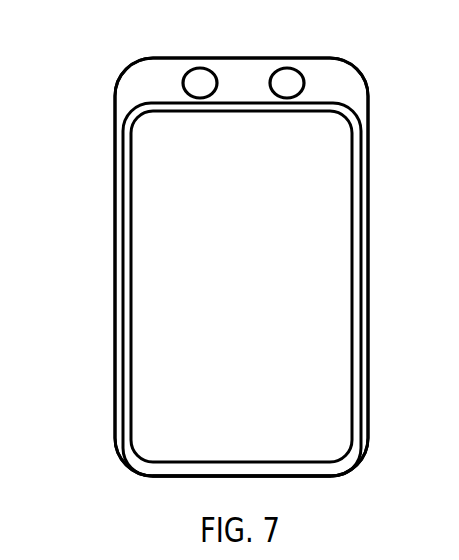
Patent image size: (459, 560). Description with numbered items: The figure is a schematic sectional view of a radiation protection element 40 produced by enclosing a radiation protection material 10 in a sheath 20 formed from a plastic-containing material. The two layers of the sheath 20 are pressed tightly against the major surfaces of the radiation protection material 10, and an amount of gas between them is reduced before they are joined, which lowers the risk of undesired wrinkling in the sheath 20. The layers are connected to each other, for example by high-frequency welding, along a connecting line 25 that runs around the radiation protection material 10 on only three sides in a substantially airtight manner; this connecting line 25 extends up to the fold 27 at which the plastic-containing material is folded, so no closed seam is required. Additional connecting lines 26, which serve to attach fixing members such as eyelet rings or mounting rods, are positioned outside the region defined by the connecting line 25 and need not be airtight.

The radiation protection element 40 is at (107, 101).
The sheath 20 is at (258, 248).
The connecting line 25 is at (273, 281).
The fold 27 is at (272, 497).
The radiation protection material 10 is at (232, 294).
The additional connecting lines 26 is at (255, 52).